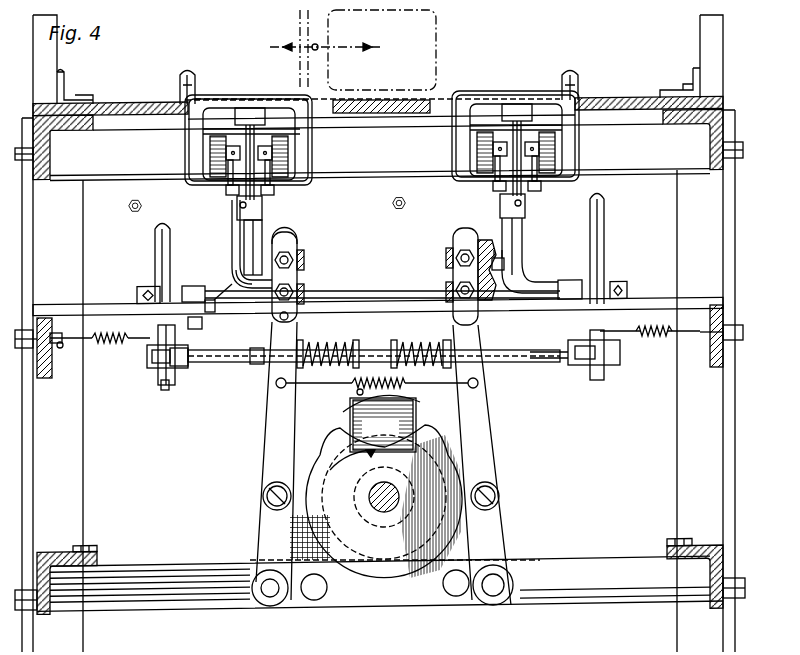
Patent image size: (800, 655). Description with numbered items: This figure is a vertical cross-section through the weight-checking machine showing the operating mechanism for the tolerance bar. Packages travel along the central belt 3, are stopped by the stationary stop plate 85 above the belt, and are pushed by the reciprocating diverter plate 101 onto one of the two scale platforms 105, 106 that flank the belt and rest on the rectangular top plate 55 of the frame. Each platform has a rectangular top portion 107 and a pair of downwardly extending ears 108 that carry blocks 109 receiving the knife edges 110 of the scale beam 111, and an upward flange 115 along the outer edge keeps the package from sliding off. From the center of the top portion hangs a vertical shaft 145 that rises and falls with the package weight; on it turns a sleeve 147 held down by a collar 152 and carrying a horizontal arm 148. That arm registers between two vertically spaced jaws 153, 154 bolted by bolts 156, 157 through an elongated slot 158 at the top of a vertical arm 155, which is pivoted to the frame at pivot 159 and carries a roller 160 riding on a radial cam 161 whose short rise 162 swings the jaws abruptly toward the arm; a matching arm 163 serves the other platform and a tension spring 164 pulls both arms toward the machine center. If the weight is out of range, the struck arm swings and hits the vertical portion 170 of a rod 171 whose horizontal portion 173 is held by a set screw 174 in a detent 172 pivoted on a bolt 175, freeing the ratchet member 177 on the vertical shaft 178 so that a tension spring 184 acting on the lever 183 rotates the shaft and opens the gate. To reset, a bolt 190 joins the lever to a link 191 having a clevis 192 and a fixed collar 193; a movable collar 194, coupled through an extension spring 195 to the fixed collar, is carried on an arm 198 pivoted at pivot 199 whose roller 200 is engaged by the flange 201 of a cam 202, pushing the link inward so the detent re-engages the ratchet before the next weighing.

The central belt 3 is at (395, 98).
The top plate 55 is at (600, 98).
The stop plate 85 is at (436, 47).
The diverter plate 101 is at (300, 22).
The scale platform 105 is at (244, 96).
The scale platform 106 is at (515, 90).
The top portion 107 is at (238, 96).
The ears 108 is at (195, 173).
The blocks 109 is at (212, 148).
The knife edges 110 is at (274, 178).
The scale beam 111 is at (220, 168).
The flange 115 is at (185, 72).
The vertical shaft 145 is at (300, 131).
The sleeve 147 is at (244, 230).
The arm 148 is at (292, 240).
The collar 152 is at (262, 207).
The jaw 153 is at (300, 276).
The jaw 154 is at (302, 295).
The arm 155 is at (262, 444).
The bolt 156 is at (302, 262).
The bolt 157 is at (292, 316).
The elongated slot 158 is at (452, 262).
The pivot 159 is at (270, 606).
The roller 160 is at (266, 500).
The radial cam 161 is at (415, 578).
The rise 162 is at (268, 486).
The arm 163 is at (491, 412).
The tension spring 164 is at (357, 394).
The vertically extending portion 170 is at (232, 255).
The rod 171 is at (236, 283).
The detent 172 is at (182, 291).
The horizontal portion 173 is at (214, 303).
The set screw 174 is at (200, 320).
The bolt 175 is at (155, 247).
The ratchet member 177 is at (137, 297).
The vertical shaft 178 is at (160, 381).
The lever 183 is at (155, 362).
The tension spring 184 is at (128, 341).
The bolt 190 is at (166, 391).
The link 191 is at (255, 362).
The clevis 192 is at (185, 366).
The fixed collar 193 is at (400, 344).
The movable collar 194 is at (262, 366).
The extension spring 195 is at (306, 362).
The arm 198 is at (356, 428).
The pivot 199 is at (314, 600).
The roller 200 is at (462, 470).
The flange 201 is at (394, 398).
The cam 202 is at (383, 425).